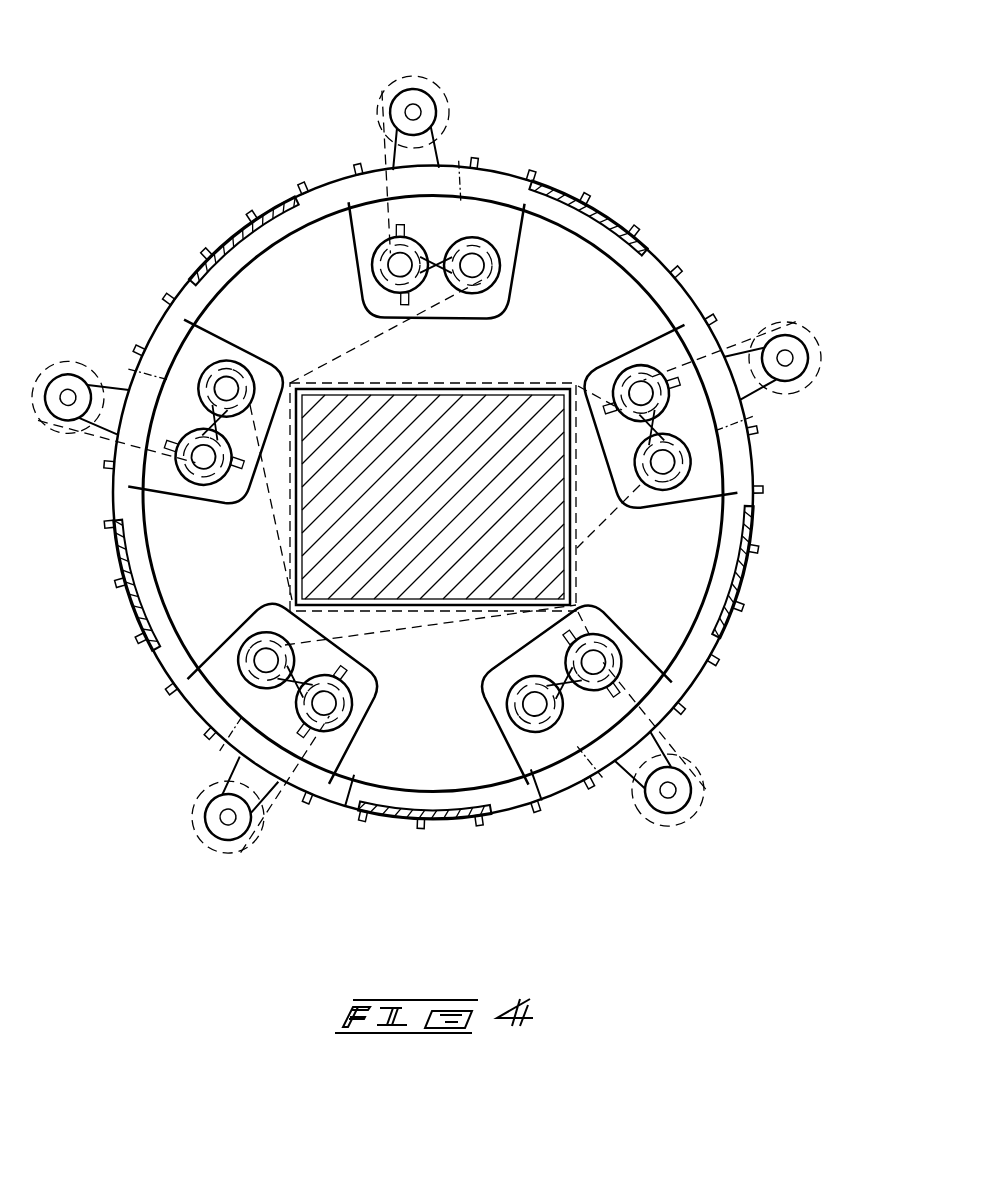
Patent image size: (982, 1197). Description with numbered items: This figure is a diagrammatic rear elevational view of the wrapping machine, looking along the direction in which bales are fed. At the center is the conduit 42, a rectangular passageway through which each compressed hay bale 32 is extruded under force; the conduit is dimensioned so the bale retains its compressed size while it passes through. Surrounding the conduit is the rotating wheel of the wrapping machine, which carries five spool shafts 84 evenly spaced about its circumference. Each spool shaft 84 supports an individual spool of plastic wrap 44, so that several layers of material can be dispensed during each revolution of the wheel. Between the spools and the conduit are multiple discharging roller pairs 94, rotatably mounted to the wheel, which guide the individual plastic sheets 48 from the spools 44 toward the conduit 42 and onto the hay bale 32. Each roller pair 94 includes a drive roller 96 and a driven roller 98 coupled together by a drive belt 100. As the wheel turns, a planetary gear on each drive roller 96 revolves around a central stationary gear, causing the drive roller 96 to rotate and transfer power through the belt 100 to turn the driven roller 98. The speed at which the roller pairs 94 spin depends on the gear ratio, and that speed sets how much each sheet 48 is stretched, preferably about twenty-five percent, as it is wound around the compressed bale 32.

The compressed hay bale 32 is at (385, 455).
The conduit 42 is at (480, 388).
The spool of material 44 is at (447, 103).
The sheet of material 48 is at (352, 346).
The spool shaft 84 is at (413, 112).
The discharging roller pair 94 is at (475, 322).
The drive roller 96 is at (485, 285).
The driven roller 98 is at (372, 266).
The drive belt 100 is at (432, 262).